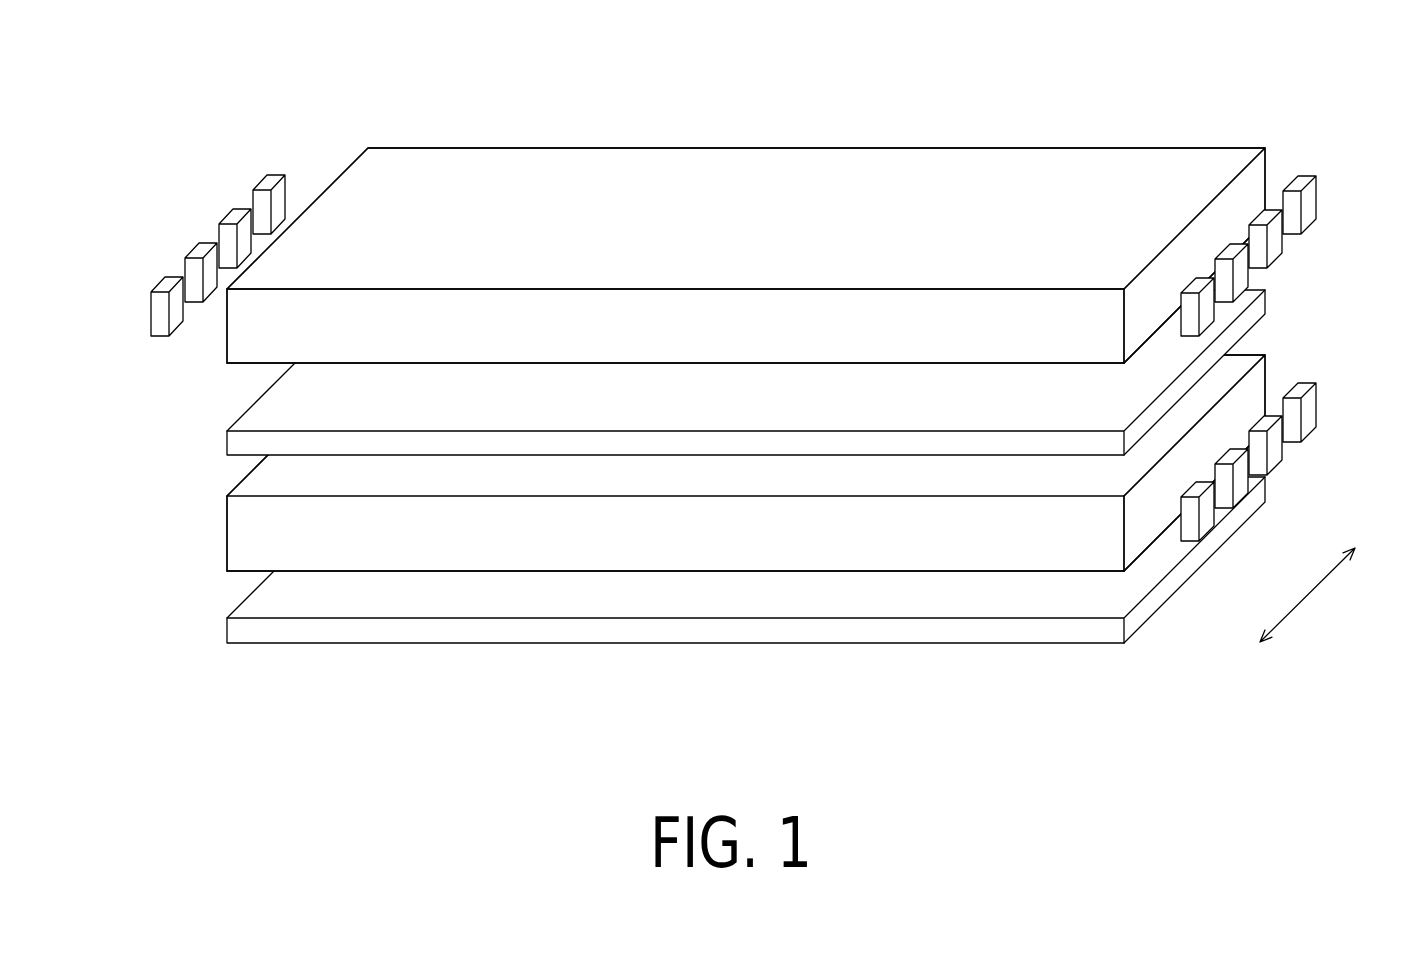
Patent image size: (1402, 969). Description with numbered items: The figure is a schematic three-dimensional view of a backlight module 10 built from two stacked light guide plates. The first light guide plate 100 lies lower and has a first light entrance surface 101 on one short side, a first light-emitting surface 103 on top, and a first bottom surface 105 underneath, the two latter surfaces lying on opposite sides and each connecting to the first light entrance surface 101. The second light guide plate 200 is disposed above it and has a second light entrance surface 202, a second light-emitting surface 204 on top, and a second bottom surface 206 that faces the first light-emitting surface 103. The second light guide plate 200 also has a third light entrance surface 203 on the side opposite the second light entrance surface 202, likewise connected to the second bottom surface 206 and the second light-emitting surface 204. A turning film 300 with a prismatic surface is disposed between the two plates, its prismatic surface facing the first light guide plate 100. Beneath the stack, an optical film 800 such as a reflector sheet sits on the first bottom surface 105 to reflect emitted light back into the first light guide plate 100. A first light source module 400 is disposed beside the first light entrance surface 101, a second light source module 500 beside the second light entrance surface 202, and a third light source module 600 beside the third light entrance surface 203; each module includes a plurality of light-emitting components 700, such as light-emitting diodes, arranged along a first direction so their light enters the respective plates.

The backlight module 10 is at (170, 56).
The first light guide plate 100 is at (733, 468).
The first light entrance surface 101 is at (1252, 387).
The first light-emitting surface 103 is at (267, 481).
The first bottom surface 105 is at (247, 573).
The second light guide plate 200 is at (732, 237).
The second light entrance surface 202 is at (1252, 178).
The third light entrance surface 203 is at (227, 338).
The second light-emitting surface 204 is at (432, 182).
The second bottom surface 206 is at (248, 365).
The turning film 300 is at (1267, 300).
The first light source module 400 is at (1316, 396).
The second light source module 500 is at (1316, 186).
The third light source module 600 is at (152, 320).
The light-emitting component 700 is at (736, 340).
The optical film 800 is at (225, 630).